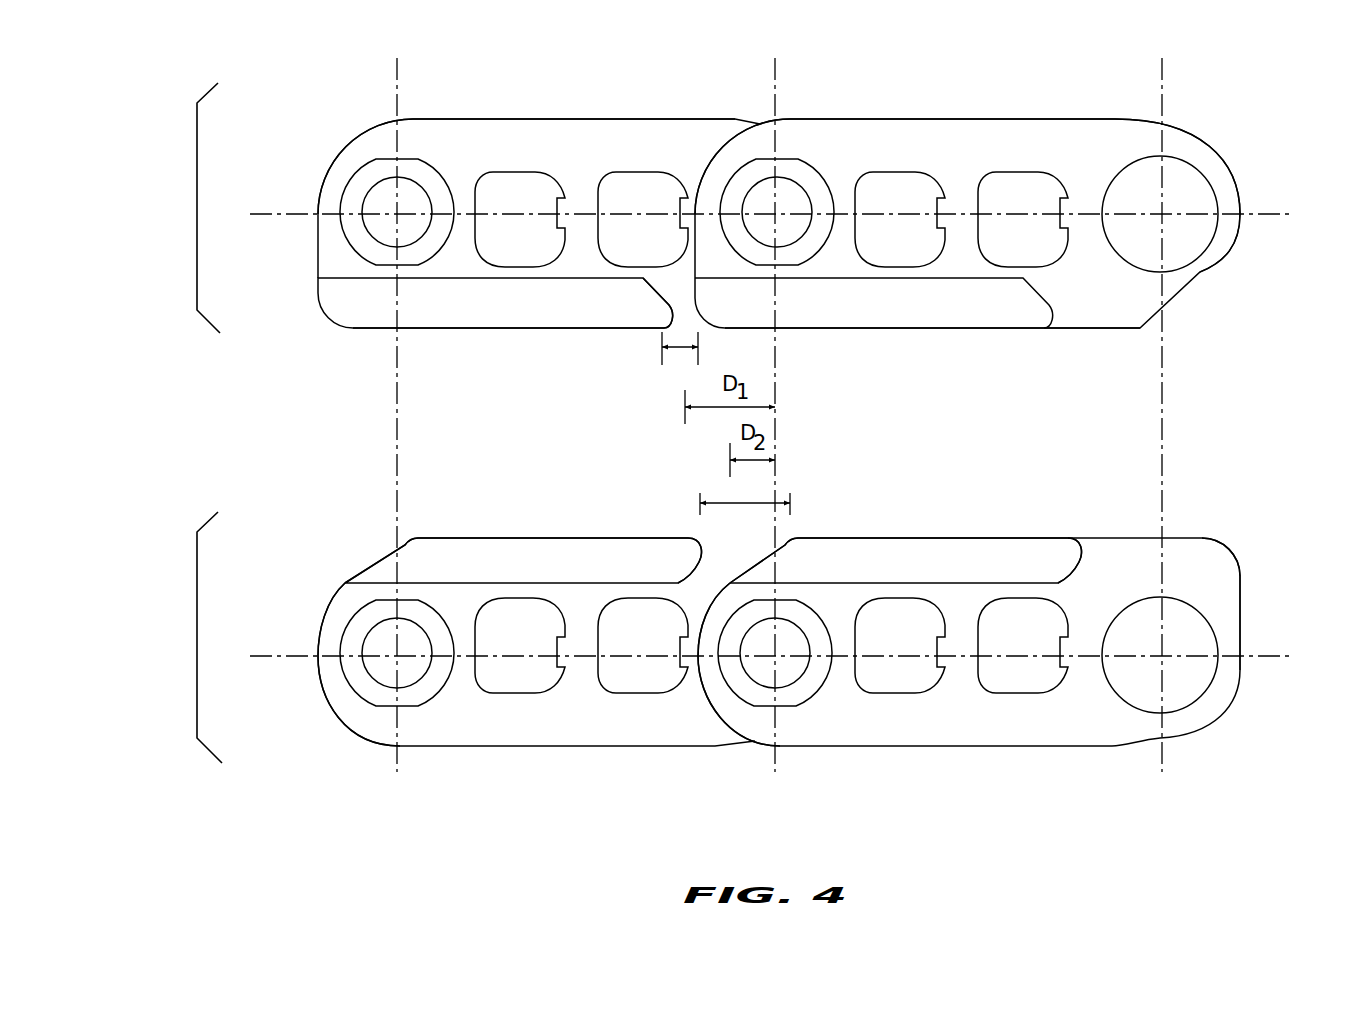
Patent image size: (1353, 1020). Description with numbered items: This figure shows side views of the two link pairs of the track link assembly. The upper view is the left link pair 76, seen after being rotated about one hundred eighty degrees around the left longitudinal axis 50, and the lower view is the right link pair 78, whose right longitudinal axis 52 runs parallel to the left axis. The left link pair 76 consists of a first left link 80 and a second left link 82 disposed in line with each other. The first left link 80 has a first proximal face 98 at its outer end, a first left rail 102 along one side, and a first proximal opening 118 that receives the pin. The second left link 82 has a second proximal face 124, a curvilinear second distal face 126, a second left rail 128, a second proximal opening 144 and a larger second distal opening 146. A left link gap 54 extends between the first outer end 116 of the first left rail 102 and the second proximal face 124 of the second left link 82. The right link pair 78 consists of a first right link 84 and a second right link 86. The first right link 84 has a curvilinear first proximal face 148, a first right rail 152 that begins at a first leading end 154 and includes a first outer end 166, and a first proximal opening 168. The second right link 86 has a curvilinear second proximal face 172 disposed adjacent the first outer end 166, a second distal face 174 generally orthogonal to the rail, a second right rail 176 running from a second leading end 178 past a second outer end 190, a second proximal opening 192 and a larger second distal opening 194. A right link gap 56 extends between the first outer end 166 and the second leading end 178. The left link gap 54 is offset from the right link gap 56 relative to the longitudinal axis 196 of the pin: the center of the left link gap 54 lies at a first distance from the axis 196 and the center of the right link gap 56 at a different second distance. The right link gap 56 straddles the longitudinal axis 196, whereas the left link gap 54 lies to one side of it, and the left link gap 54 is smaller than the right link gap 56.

The left longitudinal axis 50 is at (1241, 214).
The right longitudinal axis 52 is at (1278, 655).
The left link gap 54 is at (670, 348).
The right link gap 56 is at (733, 502).
The left link pair 76 is at (197, 207).
The right link pair 78 is at (197, 628).
The first left link 80 is at (503, 211).
The second left link 82 is at (986, 223).
The first right link 84 is at (515, 643).
The second right link 86 is at (1000, 646).
The first proximal face 98 is at (318, 203).
The first left rail 102 is at (513, 328).
The first outer end 116 is at (663, 320).
The first proximal opening 118 is at (414, 196).
The second proximal face 124 is at (690, 200).
The second distal face 126 is at (1210, 148).
The second left rail 128 is at (921, 328).
The second proximal opening 144 is at (787, 192).
The second distal opening 146 is at (1184, 238).
The first proximal face 148 is at (330, 614).
The first right rail 152 is at (560, 537).
The first leading end 154 is at (410, 537).
The first outer end 166 is at (693, 537).
The first proximal opening 168 is at (410, 668).
The second proximal face 172 is at (713, 702).
The second distal face 174 is at (1241, 570).
The second right rail 176 is at (967, 537).
The second leading end 178 is at (797, 537).
The second outer end 190 is at (1075, 537).
The second proximal opening 192 is at (791, 673).
The second distal opening 194 is at (1196, 683).
The longitudinal axis 196 is at (777, 125).